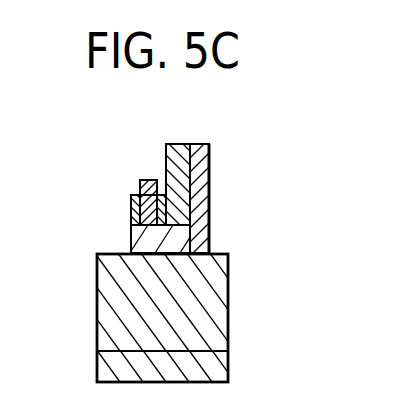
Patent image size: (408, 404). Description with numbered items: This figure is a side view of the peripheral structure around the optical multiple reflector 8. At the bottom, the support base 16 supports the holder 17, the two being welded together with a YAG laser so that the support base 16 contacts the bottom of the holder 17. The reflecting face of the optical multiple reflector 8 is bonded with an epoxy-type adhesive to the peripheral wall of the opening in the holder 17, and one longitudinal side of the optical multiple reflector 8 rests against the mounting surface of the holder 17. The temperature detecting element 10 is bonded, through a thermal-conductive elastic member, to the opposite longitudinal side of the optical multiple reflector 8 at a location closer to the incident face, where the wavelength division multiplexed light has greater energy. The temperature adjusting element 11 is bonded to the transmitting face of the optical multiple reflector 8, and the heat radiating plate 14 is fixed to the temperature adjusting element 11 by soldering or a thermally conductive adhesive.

The optical multiple reflector 8 is at (142, 212).
The temperature detecting element 10 is at (147, 181).
The temperature adjusting element 11 is at (181, 158).
The heat radiating plate 14 is at (204, 165).
The support base 16 is at (192, 292).
The holder 17 is at (140, 243).